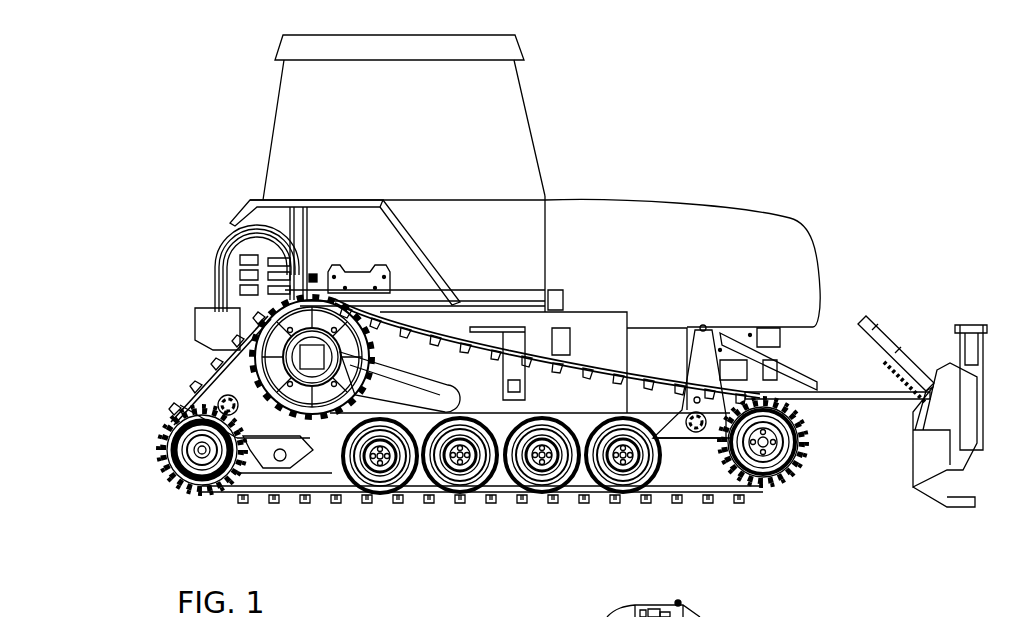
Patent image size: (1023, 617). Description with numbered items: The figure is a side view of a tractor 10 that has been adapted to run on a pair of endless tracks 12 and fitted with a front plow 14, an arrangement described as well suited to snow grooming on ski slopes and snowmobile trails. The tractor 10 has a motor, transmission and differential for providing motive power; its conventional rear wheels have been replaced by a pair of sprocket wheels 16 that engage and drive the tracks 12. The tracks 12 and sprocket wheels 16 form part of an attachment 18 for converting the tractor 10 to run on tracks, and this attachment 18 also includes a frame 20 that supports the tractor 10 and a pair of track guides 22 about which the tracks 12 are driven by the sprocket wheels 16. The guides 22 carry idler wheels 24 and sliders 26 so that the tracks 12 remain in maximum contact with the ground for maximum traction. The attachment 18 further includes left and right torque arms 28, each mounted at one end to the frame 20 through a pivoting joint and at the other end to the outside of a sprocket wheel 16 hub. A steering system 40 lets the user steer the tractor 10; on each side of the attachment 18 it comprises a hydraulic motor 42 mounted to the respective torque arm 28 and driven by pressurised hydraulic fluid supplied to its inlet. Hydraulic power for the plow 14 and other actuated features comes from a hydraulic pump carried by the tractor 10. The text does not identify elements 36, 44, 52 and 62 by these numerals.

The tractor 10 is at (740, 128).
The endless tracks 12 is at (419, 436).
The front plow 14 is at (968, 325).
The sprocket wheels 16 is at (255, 295).
The attachment 18 is at (133, 459).
The frame 20 is at (815, 487).
The track guides 22 is at (705, 478).
The idler wheels 24 is at (193, 490).
The sliders 26 is at (323, 495).
The torque arms 28 is at (427, 417).
The steering system 40 is at (168, 374).
The hydraulic component 36 is at (543, 607).
The hydraulic motor 42 is at (654, 613).
The hydraulic component 44 is at (665, 614).
The hydraulic component 52 is at (678, 603).
The hydraulic component 62 is at (643, 613).